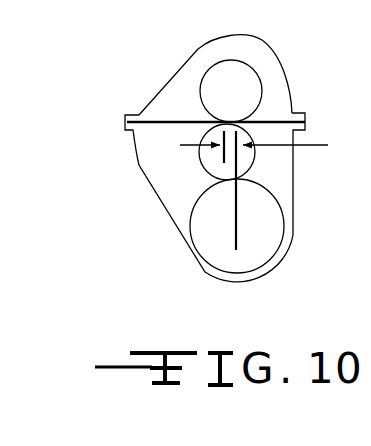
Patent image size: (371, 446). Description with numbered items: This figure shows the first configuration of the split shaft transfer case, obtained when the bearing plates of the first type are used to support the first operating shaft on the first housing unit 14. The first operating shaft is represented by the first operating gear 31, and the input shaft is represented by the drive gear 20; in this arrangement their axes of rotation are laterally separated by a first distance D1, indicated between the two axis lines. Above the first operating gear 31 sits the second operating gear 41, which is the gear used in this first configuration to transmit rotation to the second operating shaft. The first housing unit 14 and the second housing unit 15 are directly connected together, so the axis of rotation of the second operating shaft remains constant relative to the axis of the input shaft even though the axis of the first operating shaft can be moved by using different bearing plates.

The first housing unit 14 is at (165, 183).
The second housing unit 15 is at (178, 92).
The second operating gear 41 is at (243, 93).
The first operating gear 31 is at (214, 165).
The drive gear 20 is at (255, 235).
The first distance D1 is at (270, 146).